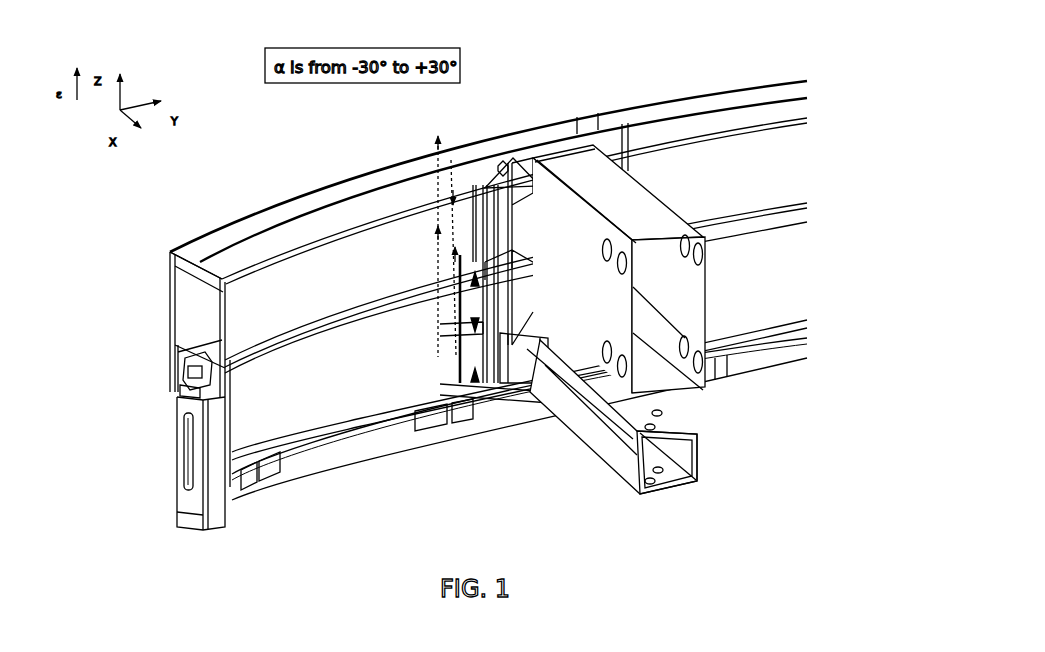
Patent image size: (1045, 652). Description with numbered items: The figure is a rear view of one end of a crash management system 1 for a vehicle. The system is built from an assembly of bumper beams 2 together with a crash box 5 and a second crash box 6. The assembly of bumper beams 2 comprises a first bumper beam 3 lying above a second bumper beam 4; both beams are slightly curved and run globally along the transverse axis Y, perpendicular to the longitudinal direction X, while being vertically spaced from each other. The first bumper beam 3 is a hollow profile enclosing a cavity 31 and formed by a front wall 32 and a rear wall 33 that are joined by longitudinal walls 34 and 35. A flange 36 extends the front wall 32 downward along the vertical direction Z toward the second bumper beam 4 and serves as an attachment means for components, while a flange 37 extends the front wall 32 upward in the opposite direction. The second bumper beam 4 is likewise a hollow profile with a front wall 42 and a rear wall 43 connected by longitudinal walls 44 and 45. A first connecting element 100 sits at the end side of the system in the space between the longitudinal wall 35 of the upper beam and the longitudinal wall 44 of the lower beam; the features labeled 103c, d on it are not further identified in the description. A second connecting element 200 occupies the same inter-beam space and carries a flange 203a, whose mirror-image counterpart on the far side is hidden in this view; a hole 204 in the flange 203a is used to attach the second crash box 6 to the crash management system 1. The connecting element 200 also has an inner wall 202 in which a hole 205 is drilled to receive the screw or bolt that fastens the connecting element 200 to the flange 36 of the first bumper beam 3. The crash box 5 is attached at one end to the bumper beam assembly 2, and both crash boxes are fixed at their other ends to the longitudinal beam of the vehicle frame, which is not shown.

The crash management system 1 is at (590, 55).
The assembly of bumper beams 2 is at (126, 190).
The first bumper beam 3 is at (480, 239).
The second bumper beam 4 is at (551, 430).
The crash box 5 is at (716, 279).
The second crash box 6 is at (699, 456).
The cavity 31 is at (196, 318).
The front wall 32 is at (167, 290).
The rear wall 33 is at (451, 158).
The longitudinal wall 34 is at (370, 202).
The longitudinal wall 35 is at (186, 357).
The flange 36 is at (167, 378).
The flange 37 is at (300, 192).
The front wall 42 is at (167, 507).
The rear wall 43 is at (340, 457).
The longitudinal wall 44 is at (345, 417).
The longitudinal wall 45 is at (294, 491).
The first connecting element 100 is at (124, 453).
The mounting holes 103c, d is at (180, 390).
The second connecting element 200 is at (477, 314).
The inner wall 202 is at (470, 357).
The flange 203a is at (530, 385).
The hole 204 is at (528, 385).
The hole 205 is at (450, 325).